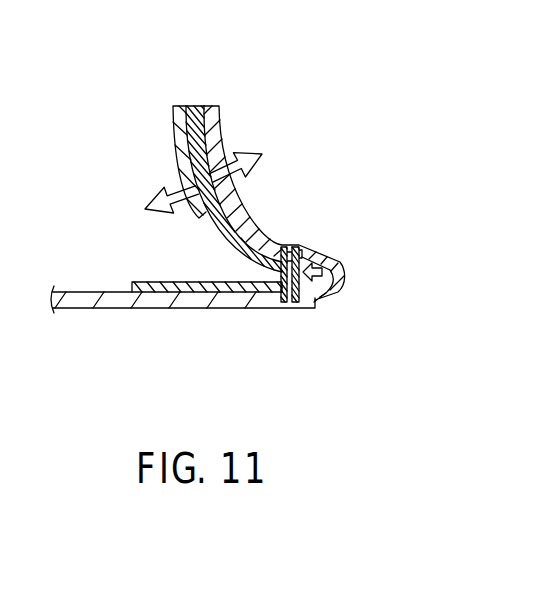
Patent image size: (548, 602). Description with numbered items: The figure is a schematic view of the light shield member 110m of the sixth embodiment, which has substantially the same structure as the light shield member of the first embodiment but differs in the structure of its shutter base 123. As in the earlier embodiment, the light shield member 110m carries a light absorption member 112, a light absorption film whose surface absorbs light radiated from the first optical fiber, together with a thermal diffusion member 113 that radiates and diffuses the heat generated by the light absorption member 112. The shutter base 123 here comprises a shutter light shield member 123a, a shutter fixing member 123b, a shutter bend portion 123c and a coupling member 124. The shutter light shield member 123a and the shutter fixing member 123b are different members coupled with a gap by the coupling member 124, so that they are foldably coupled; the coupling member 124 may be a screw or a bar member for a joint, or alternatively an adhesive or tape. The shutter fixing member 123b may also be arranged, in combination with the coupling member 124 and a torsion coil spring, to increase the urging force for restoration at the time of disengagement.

The light shield member 110m is at (243, 199).
The light absorption member 112 is at (184, 150).
The thermal diffusion member 113 is at (236, 190).
The shutter base 123 is at (243, 153).
The shutter light shield member 123a is at (206, 120).
The shutter fixing member 123b is at (193, 292).
The shutter bend portion 123c is at (313, 260).
The coupling member 124 is at (285, 303).